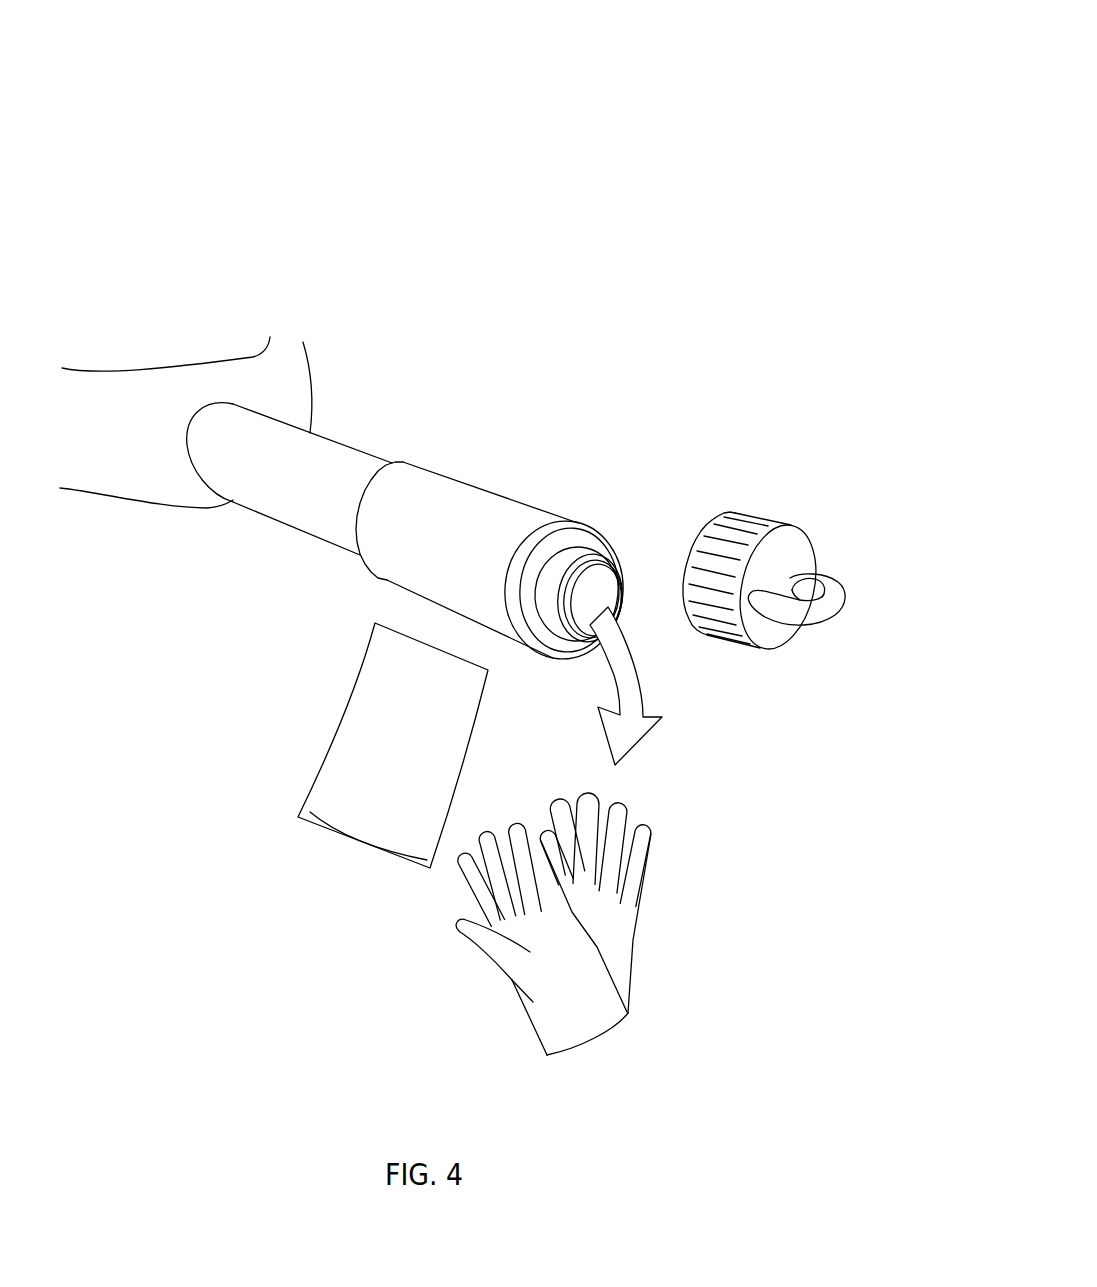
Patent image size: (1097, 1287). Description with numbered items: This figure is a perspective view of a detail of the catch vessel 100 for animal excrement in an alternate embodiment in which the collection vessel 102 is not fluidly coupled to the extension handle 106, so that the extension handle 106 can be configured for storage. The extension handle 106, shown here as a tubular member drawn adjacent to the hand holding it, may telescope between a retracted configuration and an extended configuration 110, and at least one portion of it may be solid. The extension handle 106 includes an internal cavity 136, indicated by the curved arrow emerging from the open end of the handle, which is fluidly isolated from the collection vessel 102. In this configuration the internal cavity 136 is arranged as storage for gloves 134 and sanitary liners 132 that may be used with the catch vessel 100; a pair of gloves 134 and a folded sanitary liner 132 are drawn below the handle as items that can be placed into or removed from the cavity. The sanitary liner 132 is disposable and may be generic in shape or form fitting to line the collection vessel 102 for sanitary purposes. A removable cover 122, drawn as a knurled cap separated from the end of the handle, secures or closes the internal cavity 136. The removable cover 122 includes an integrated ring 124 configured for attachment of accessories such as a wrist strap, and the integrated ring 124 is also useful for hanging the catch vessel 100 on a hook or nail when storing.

The catch vessel 100 is at (703, 62).
The collection vessel 102 is at (314, 364).
The extension handle 106 is at (345, 441).
The extended configuration 110 is at (594, 527).
The removable cover 122 is at (776, 515).
The integrated ring 124 is at (832, 575).
The sanitary liner 132 is at (328, 728).
The gloves 134 is at (641, 943).
The internal cavity 136 is at (595, 593).